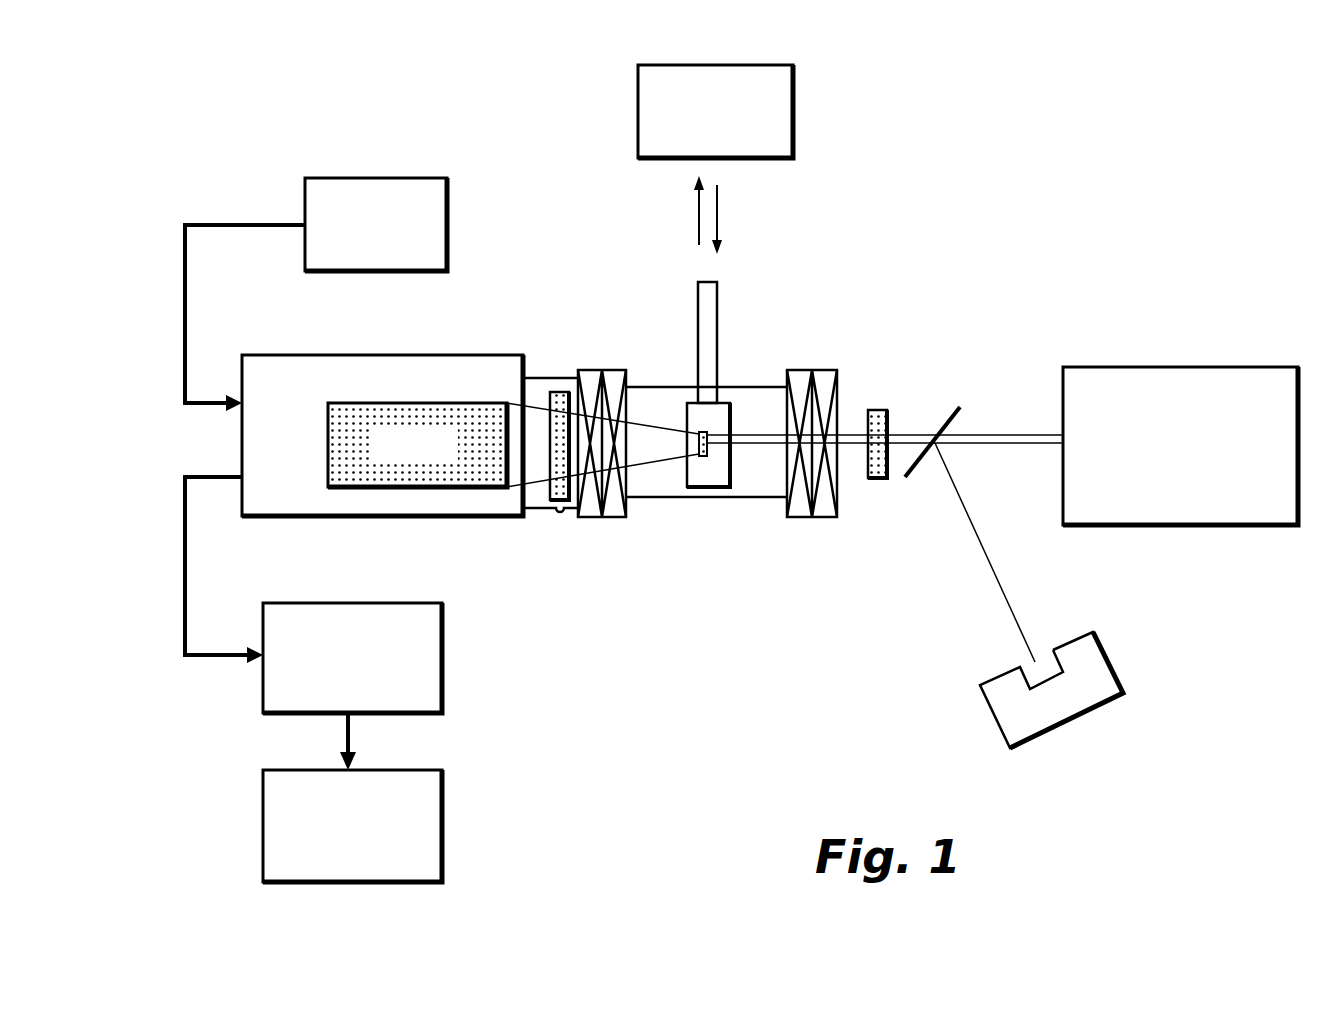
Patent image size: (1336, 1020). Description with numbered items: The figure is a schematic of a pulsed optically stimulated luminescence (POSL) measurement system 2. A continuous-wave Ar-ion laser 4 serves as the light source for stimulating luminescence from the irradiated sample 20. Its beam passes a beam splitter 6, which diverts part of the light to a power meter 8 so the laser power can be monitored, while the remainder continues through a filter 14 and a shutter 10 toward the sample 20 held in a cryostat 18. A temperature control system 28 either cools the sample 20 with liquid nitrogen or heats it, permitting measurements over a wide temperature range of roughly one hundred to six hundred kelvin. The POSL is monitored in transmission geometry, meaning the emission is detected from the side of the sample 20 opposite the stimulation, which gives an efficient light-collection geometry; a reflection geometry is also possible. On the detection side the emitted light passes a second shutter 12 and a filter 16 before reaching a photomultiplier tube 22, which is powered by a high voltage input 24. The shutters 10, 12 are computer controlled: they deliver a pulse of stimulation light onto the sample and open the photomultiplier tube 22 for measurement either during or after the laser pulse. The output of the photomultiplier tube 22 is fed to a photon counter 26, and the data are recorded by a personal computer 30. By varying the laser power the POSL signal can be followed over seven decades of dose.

The system 2 is at (775, 545).
The Ar-ion laser 4 is at (1218, 378).
The beam splitter 6 is at (963, 418).
The power meter 8 is at (1103, 690).
The shutter 10 is at (822, 372).
The shutter 12 is at (608, 370).
The filter 14 is at (874, 410).
The filter 16 is at (557, 392).
The cryostat 18 is at (727, 405).
The sample 20 is at (708, 455).
The photomultiplier tube 22 is at (355, 405).
The high voltage input 24 is at (392, 183).
The photon counter 26 is at (348, 603).
The temperature control system 28 is at (710, 300).
The personal computer 30 is at (265, 803).